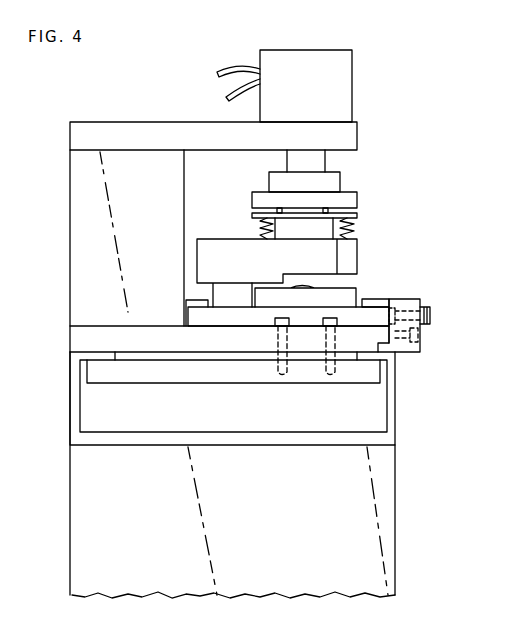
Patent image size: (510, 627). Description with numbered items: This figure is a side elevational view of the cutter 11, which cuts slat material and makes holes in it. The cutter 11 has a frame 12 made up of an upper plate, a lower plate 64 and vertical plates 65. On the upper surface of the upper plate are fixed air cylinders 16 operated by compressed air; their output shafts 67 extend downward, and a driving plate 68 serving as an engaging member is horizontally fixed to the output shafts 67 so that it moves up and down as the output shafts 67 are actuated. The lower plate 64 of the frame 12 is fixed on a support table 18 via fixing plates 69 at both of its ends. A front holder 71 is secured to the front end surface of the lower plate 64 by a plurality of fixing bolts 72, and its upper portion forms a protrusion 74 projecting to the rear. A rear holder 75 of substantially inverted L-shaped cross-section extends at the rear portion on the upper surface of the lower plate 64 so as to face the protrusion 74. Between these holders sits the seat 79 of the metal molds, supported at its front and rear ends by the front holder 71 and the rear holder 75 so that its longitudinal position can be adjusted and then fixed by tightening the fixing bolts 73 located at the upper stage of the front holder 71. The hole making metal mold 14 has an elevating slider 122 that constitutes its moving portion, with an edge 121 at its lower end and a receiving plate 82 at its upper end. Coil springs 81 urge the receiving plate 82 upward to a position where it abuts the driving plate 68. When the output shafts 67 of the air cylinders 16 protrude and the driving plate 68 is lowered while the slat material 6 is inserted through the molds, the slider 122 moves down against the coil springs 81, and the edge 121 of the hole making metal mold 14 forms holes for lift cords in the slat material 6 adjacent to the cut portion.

The cutter 11 is at (412, 116).
The frame 12 is at (75, 203).
The vertical plates 65 is at (77, 240).
The air cylinders 16 is at (347, 82).
The output shafts 67 is at (320, 160).
The driving plate 68 is at (262, 197).
The receiving plate 82 is at (358, 212).
The coil springs 81 is at (262, 226).
The elevating slider 122 is at (315, 232).
The hole making metal mold 14 is at (203, 256).
The edge 121 is at (295, 280).
The slat material 6 is at (332, 287).
The rear holder 75 is at (187, 304).
The seat 79 is at (252, 320).
The protrusion 74 is at (375, 302).
The front holder 71 is at (410, 303).
The fixing bolts 73 is at (430, 312).
The fixing bolts 72 is at (418, 335).
The lower plate 64 is at (76, 329).
The fixing plates 69 is at (194, 373).
The support table 18 is at (396, 410).